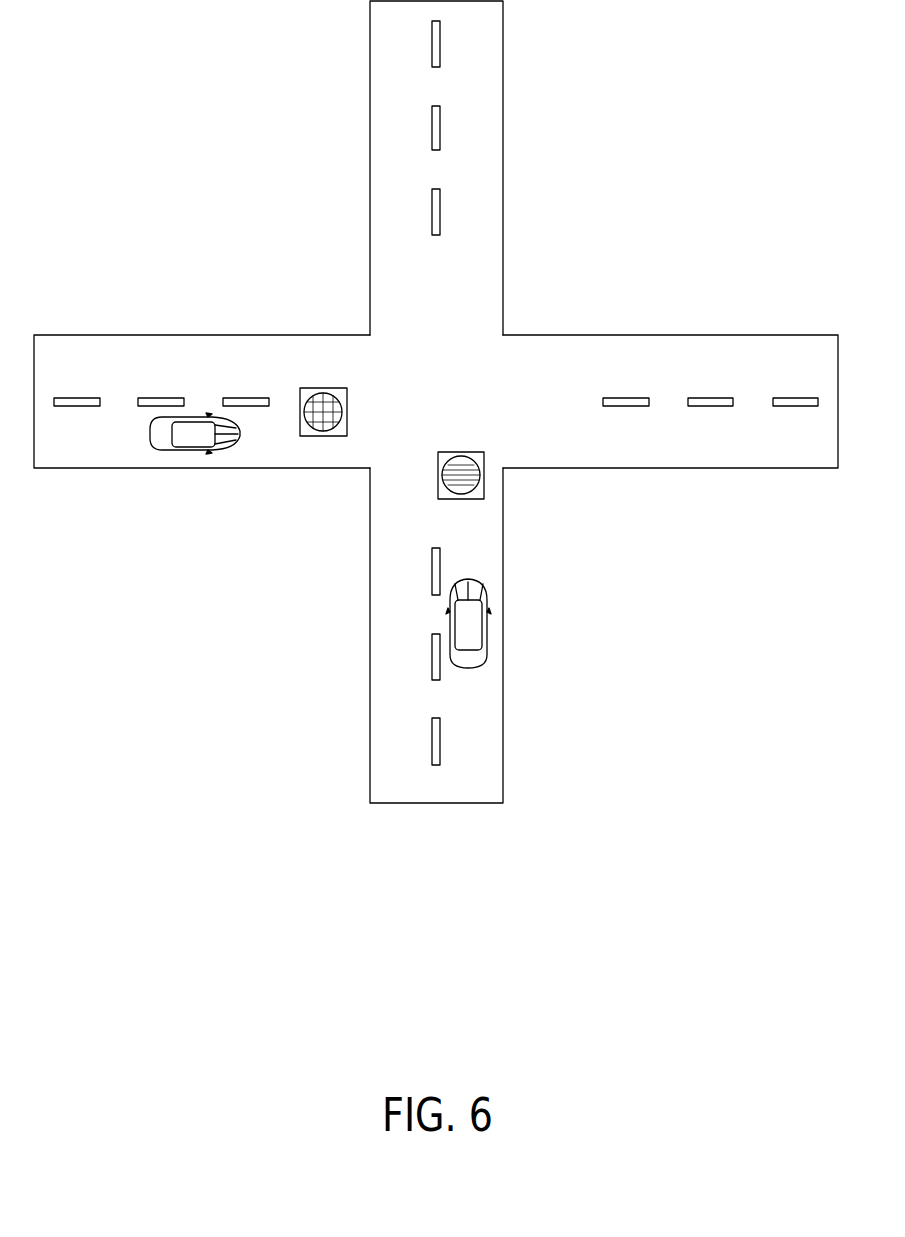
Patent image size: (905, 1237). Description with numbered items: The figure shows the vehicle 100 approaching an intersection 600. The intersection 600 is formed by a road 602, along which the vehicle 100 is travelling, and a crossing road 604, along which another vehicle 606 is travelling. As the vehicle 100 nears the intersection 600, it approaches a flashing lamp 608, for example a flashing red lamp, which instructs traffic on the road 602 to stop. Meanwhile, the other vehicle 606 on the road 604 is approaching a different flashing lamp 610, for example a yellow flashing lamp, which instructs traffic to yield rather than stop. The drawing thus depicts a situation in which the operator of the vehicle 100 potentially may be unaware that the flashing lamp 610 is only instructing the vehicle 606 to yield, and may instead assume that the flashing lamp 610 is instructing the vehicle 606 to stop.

The vehicle 100 is at (485, 624).
The intersection 600 is at (436, 402).
The road 602 is at (503, 708).
The road 604 is at (188, 450).
The vehicle 606 is at (113, 335).
The flashing lamp 608 is at (484, 485).
The flashing lamp 610 is at (299, 420).